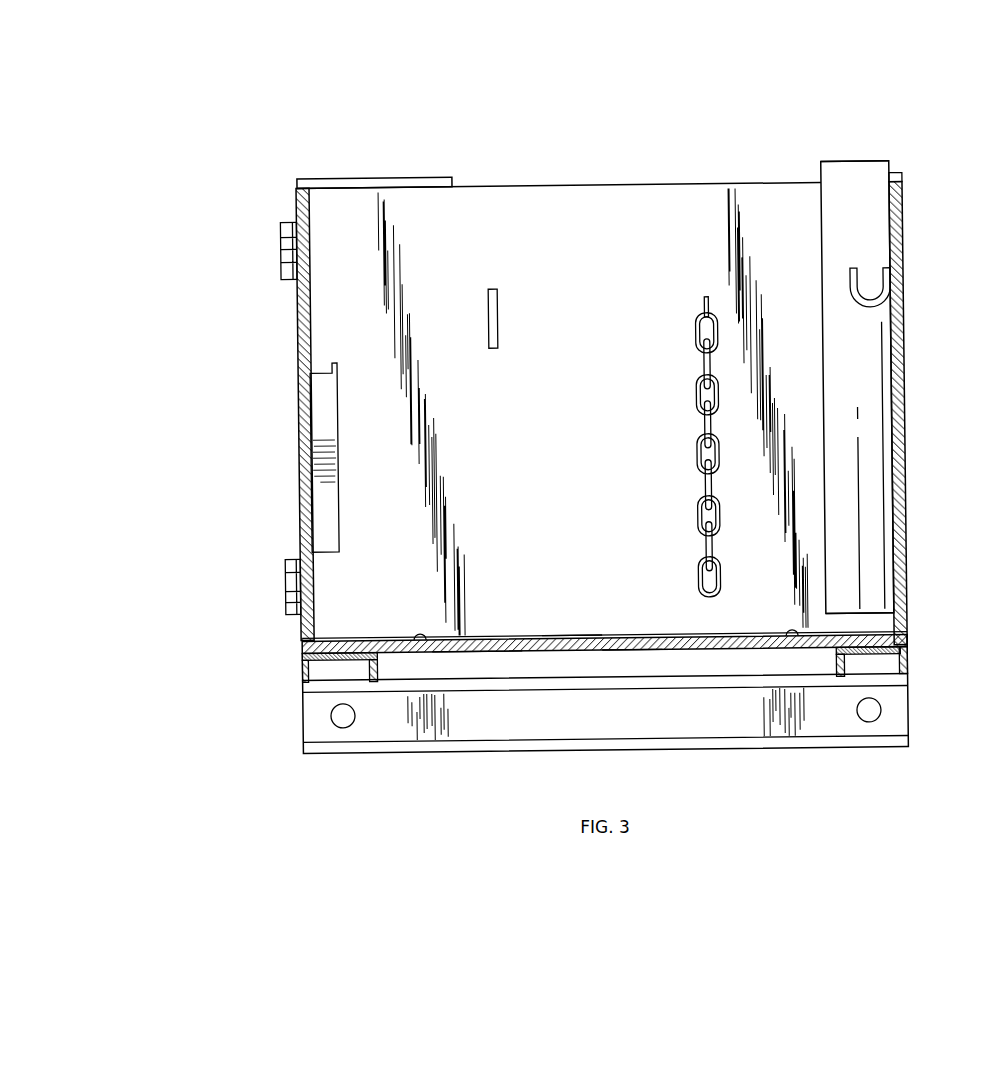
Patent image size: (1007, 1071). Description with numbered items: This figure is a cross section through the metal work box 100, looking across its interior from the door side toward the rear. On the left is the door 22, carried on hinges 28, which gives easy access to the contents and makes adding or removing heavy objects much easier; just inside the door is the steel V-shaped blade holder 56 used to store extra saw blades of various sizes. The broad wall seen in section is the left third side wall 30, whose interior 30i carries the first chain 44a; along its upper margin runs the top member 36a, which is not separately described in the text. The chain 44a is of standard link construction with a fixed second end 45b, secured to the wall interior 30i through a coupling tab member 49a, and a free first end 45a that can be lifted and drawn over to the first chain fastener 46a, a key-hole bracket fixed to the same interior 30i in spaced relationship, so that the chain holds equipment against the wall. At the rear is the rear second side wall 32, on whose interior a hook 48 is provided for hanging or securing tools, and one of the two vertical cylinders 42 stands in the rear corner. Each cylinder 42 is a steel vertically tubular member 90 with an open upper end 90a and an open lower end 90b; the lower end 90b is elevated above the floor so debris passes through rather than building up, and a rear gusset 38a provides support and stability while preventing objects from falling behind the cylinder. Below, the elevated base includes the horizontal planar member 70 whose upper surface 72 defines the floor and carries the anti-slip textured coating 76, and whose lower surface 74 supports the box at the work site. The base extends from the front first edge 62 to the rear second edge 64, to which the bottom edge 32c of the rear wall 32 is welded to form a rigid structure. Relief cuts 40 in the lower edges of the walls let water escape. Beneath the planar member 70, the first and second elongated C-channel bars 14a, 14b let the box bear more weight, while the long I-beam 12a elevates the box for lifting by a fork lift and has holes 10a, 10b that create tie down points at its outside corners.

The work box 100 is at (243, 171).
The left third side wall 30 is at (566, 208).
The top plate 36a is at (382, 176).
The door 22 is at (299, 348).
The hinges 28 is at (281, 246).
The steel V-shaped blade holder 56 is at (350, 453).
The first chain fastener 46a is at (490, 304).
The interior of the left third side wall 30i is at (556, 348).
The first chain 44a is at (672, 410).
The coupling tab member 49a is at (706, 300).
The fixed second end 45b is at (700, 330).
The free first end 45a is at (700, 592).
The vertical cylinder 42 is at (836, 188).
The open upper end 90a is at (872, 164).
The vertically tubular member 90 is at (870, 490).
The open lower end 90b is at (828, 618).
The hook 48 is at (870, 310).
The rear second side wall 32 is at (906, 393).
The rear gusset 38a is at (905, 180).
The horizontal planar member 70 is at (511, 636).
The anti-slip textured coating 76 is at (568, 636).
The upper surface 72 is at (628, 636).
The rear second edge 64 is at (907, 642).
The relief cut 40 is at (416, 630).
The front first edge 62 is at (300, 652).
The first elongated C-channel bar 14a is at (300, 680).
The second elongated C-channel bar 14b is at (906, 675).
The bottom edge of the rear second side wall 32c is at (906, 660).
The lower surface 74 is at (478, 650).
The first long I-beam 12a is at (888, 722).
The hole 10a is at (340, 726).
The hole 10b is at (866, 726).